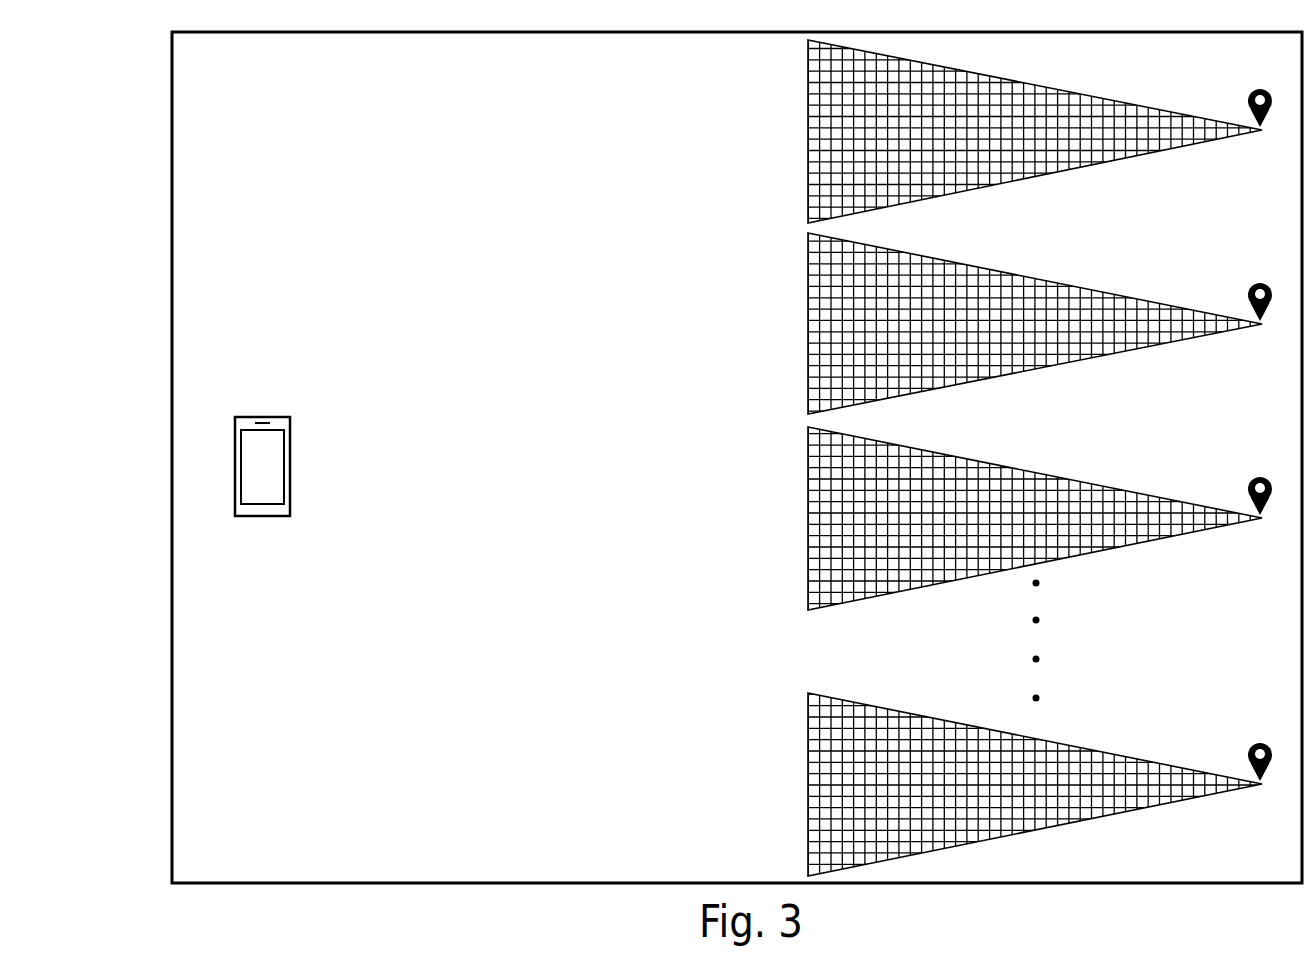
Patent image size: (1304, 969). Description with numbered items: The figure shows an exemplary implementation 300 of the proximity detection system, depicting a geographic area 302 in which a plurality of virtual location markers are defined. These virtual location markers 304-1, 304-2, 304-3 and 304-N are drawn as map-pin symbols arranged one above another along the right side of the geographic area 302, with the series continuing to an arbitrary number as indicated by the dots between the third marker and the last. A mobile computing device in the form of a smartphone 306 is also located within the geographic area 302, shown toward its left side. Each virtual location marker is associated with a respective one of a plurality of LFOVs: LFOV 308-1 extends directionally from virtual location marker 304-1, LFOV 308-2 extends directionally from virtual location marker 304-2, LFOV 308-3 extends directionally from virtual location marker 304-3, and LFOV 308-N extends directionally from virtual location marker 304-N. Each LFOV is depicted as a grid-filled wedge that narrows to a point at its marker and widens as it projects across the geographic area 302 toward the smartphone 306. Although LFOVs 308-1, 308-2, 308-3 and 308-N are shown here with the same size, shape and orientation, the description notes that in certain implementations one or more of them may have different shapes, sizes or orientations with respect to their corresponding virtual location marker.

The exemplary implementation 300 is at (142, 98).
The geographic area 302 is at (722, 126).
The virtual location marker 304-1 is at (1261, 88).
The virtual location marker 304-2 is at (1261, 282).
The virtual location marker 304-3 is at (1261, 476).
The virtual location marker 304-N is at (1261, 741).
The smartphone 306 is at (263, 416).
The LFOV 308-1 is at (1012, 80).
The LFOV 308-2 is at (998, 271).
The LFOV 308-3 is at (998, 465).
The LFOV 308-N is at (1002, 732).